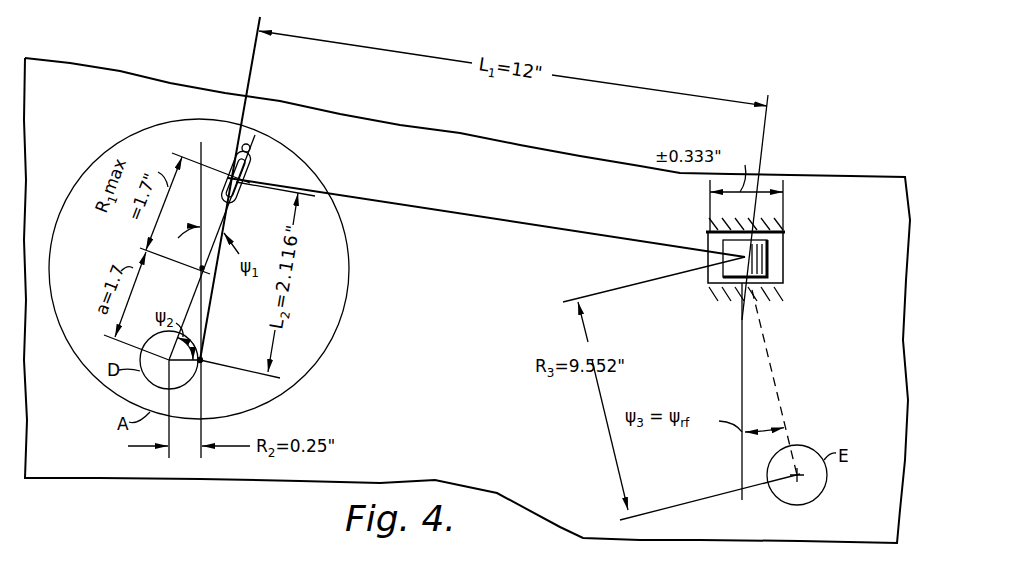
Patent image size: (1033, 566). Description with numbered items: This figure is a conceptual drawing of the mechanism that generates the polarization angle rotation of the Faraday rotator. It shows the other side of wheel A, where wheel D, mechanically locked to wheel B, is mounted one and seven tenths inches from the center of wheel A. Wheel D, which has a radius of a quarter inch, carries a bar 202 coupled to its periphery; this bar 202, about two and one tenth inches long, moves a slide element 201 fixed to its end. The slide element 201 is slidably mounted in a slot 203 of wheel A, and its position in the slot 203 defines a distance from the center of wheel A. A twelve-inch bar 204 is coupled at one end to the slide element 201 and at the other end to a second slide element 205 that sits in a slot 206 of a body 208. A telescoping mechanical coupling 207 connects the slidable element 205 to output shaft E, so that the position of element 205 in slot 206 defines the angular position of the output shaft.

The slide element 201 is at (247, 158).
The bar 202 is at (204, 357).
The slot 203 is at (247, 145).
The bar 204 is at (480, 216).
The second slide element 205 is at (768, 250).
The slot 206 is at (784, 269).
The mechanical coupling 207 is at (782, 405).
The body 208 is at (71, 465).